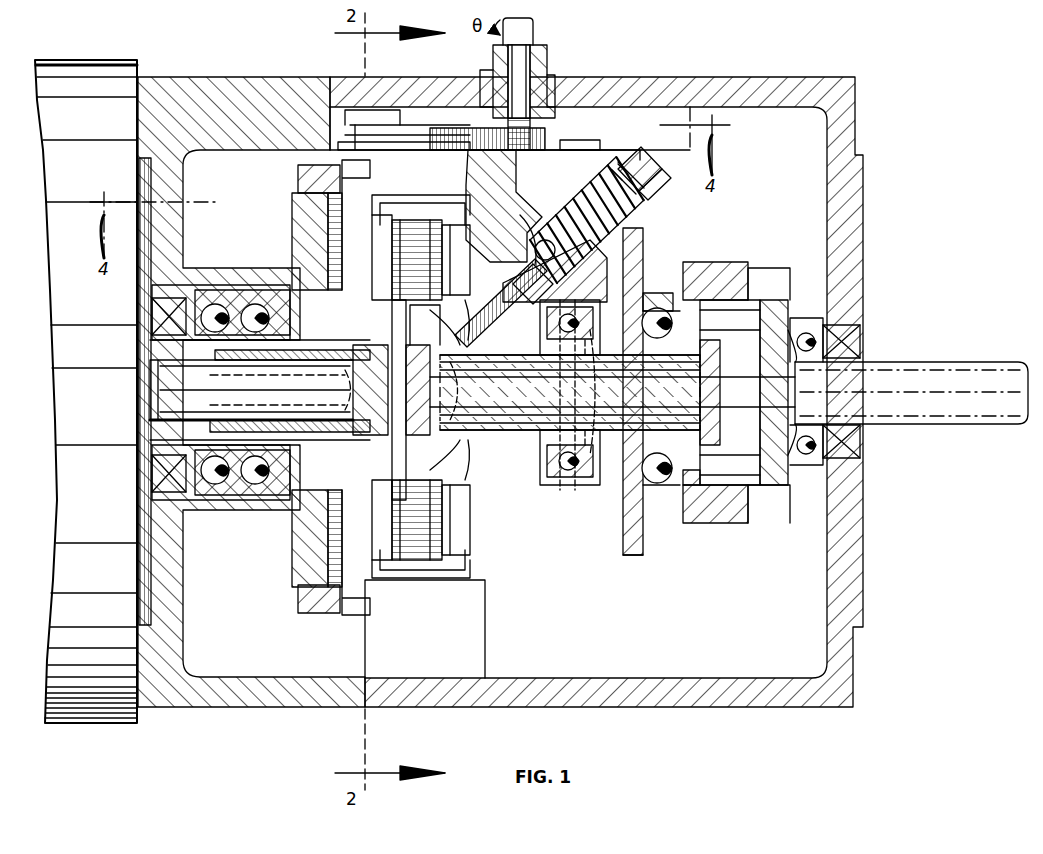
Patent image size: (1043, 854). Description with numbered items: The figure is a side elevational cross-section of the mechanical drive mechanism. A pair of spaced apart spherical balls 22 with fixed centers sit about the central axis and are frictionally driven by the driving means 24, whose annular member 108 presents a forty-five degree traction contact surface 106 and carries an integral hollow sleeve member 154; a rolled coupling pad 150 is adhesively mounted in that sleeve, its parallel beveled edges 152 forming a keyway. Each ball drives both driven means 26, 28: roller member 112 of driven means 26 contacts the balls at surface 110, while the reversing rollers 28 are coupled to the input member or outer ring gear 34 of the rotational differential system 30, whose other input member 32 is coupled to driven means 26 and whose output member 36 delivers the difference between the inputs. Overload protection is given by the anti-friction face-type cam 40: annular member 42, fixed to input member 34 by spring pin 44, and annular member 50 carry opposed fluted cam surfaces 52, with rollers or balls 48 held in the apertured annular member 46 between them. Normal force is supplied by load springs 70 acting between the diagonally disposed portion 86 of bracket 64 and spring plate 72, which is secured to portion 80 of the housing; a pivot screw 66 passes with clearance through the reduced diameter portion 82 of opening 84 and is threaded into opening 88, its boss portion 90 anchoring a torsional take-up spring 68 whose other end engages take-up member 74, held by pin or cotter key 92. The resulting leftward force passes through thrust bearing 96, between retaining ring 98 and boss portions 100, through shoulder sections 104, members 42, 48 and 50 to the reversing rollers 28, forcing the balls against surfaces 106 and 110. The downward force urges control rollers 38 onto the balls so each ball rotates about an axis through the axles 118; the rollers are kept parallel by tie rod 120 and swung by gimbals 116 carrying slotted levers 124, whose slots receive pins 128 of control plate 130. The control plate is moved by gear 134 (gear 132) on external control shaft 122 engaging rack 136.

The spherical balls 22 is at (340, 393).
The driving means 24 is at (158, 377).
The driven means 26 is at (420, 432).
The driven means or reversing rollers 28 is at (615, 392).
The rotational differential system 30 is at (752, 283).
The input member 32 is at (748, 415).
The input member or outer ring gear 34 is at (728, 262).
The output member 36 is at (770, 300).
The control rollers 38 is at (421, 387).
The anti-friction face-type cam 40 is at (656, 500).
The annular member 42 is at (658, 290).
The spring pin 44 is at (688, 290).
The annular member 46 is at (656, 483).
The rollers or balls 48 is at (650, 308).
The annular member 50 is at (635, 555).
The fluted cam surface 52 is at (630, 510).
The bracket 64 is at (518, 172).
The pivot screw 66 is at (504, 303).
The torsional take-up spring 68 is at (628, 228).
The load springs 70 is at (600, 188).
The spring plate 72 is at (640, 166).
The take-up member or screw 74 is at (650, 185).
The portion of the housing 80 is at (485, 624).
The reduced diameter portion 82 is at (567, 327).
The opening 84 is at (557, 271).
The diagonally disposed portion 86 is at (525, 222).
The opening 88 is at (470, 391).
The boss portion 90 is at (540, 240).
The pin or cotter key 92 is at (618, 166).
The thrust bearing 96 is at (570, 488).
The retaining ring 98 is at (542, 465).
The boss portions 100 is at (596, 415).
The shoulder sections 104 is at (683, 523).
The traction contact surface 106 is at (352, 186).
The annular member 108 is at (298, 190).
The surface 110 is at (420, 307).
The roller member 112 is at (440, 455).
The gimbals 116 is at (420, 205).
The axles 118 is at (330, 258).
The tie rod 120 is at (470, 488).
The external control shaft 122 is at (540, 24).
The slotted levers 124 is at (372, 148).
The pins 128 is at (358, 120).
The control plate 130 is at (556, 148).
The gear 132 is at (620, 130).
The gear 134 is at (545, 140).
The rack 136 is at (455, 130).
The coupling pad 150 is at (248, 396).
The beveled edges 152 is at (225, 362).
The hollow sleeve member 154 is at (162, 440).